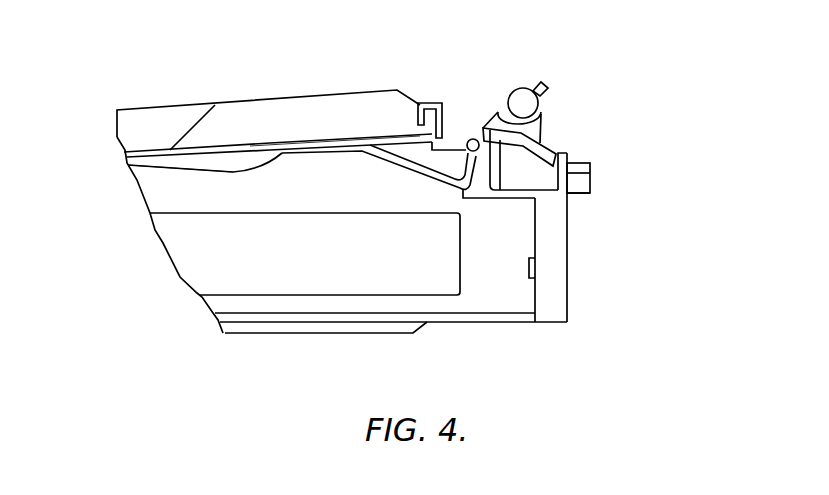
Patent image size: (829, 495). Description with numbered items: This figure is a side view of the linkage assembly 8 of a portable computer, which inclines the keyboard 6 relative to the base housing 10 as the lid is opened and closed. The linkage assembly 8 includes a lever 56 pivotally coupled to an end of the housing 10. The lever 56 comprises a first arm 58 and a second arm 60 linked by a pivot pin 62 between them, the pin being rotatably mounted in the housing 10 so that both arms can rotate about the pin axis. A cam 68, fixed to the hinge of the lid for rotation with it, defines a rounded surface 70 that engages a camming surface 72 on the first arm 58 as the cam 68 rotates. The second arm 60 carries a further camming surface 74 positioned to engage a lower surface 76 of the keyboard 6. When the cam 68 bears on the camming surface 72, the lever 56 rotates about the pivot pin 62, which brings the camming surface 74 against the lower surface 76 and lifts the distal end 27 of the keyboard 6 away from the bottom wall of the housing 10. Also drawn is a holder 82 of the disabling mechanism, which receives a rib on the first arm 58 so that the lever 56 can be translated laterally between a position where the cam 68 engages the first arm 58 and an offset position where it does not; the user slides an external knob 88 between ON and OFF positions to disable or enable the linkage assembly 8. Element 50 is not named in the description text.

The keyboard 6 is at (224, 90).
The linkage assembly 8 is at (570, 39).
The base housing 10 is at (363, 339).
The distal end 27 is at (403, 103).
The knob 50 is at (549, 80).
The lever 56 is at (481, 112).
The first arm 58 is at (567, 151).
The second arm 60 is at (418, 175).
The pivot pin 62 is at (456, 132).
The cam 68 is at (542, 109).
The rounded surface 70 is at (590, 174).
The camming surface 72 is at (612, 137).
The camming surface 74 is at (397, 153).
The lower surface 76 is at (210, 173).
The holder 82 is at (540, 185).
The knob 88 is at (590, 194).